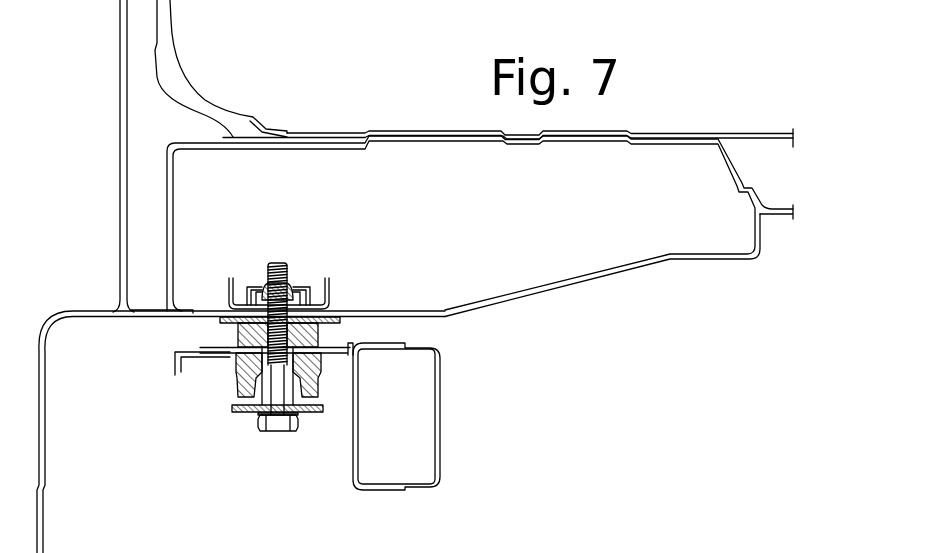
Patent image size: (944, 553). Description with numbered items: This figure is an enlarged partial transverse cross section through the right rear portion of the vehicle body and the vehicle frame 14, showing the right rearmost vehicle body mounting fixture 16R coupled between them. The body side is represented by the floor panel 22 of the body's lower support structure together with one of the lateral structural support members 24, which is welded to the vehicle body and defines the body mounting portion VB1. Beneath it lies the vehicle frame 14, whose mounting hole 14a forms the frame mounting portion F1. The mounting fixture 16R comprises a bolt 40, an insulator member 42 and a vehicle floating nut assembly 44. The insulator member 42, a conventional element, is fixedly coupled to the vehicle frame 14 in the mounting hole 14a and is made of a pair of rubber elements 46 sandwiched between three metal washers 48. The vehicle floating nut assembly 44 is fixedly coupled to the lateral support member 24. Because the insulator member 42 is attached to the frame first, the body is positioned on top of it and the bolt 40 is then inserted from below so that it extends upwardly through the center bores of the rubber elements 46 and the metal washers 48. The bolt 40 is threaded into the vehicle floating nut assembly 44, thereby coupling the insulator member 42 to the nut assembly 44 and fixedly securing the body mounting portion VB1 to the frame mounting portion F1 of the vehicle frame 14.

The vehicle frame 14 is at (445, 397).
The mounting hole 14a is at (325, 355).
The right hand side vehicle body mounting fixture 16R is at (260, 440).
The floor panel 22 is at (333, 135).
The lateral structural support member 24 is at (607, 277).
The bolt 40 is at (285, 432).
The insulator member 42 is at (235, 338).
The vehicle floating nut assembly 44 is at (252, 268).
The rubber element 46 is at (238, 330).
The metal washer 48 is at (322, 352).
The body mounting portion VB1 is at (337, 272).
The frame mounting portion F1 is at (185, 372).